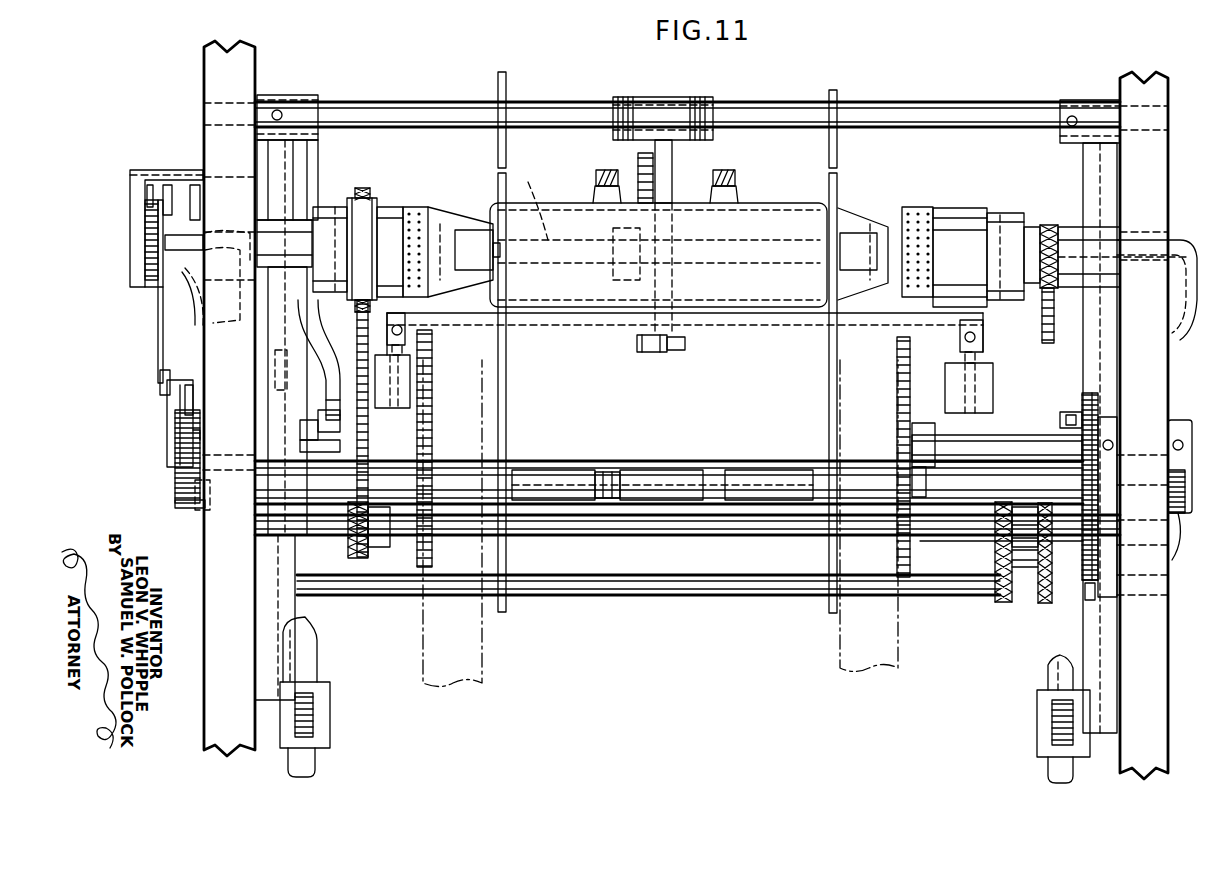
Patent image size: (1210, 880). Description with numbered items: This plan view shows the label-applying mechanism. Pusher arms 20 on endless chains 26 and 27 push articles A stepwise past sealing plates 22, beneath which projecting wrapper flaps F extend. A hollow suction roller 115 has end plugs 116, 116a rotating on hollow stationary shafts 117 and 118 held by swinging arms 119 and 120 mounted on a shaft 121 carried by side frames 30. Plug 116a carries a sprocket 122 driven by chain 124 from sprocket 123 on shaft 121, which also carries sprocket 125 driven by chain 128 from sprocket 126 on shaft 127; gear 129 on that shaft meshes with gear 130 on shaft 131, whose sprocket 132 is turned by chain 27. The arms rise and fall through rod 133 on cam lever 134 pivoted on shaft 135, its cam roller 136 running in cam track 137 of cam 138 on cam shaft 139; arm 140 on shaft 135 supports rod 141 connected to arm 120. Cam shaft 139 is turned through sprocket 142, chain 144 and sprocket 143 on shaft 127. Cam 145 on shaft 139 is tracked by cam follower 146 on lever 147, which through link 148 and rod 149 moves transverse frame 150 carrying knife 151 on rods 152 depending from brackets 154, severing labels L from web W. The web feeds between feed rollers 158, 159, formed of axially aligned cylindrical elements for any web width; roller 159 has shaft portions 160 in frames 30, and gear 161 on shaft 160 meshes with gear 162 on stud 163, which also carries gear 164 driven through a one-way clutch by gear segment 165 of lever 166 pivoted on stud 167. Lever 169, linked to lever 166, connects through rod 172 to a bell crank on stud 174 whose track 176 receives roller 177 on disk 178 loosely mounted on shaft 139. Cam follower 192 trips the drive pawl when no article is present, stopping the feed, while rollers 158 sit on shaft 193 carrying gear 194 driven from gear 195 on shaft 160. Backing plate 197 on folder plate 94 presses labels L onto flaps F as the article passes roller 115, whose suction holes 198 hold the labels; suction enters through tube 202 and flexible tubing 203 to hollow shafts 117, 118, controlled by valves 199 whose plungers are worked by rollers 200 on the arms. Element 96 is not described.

The pusher arms 20 is at (671, 174).
The heat-sealing plate 22 is at (665, 323).
The endless chain 26 is at (441, 448).
The endless chain 27 is at (893, 488).
The side frames 30 is at (666, 410).
The folder plate 94 is at (685, 350).
The web guide lines 96 is at (660, 523).
The seal applying roller 115 is at (682, 227).
The plug 116 is at (334, 213).
The plug 116a is at (1019, 219).
The hollow stationary shaft 117 is at (347, 223).
The hollow stationary shaft 118 is at (1004, 236).
The swinging arm 119 is at (322, 603).
The swinging arm 120 is at (1078, 438).
The shaft 121 is at (648, 614).
The sprocket 122 is at (1052, 258).
The sprocket 123 is at (1035, 577).
The chain 124 is at (1064, 454).
The second sprocket 125 is at (991, 604).
The sprocket 126 is at (1001, 551).
The shaft 127 is at (687, 542).
The chain 128 is at (978, 569).
The gear 129 is at (1120, 609).
The gear 130 is at (1120, 471).
The shaft 131 is at (997, 416).
The sprocket 132 is at (891, 460).
The rod 133 is at (320, 440).
The cam lever 134 is at (304, 236).
The pivot shaft 135 is at (687, 80).
The cam roller 136 is at (227, 287).
The cam track 137 is at (241, 349).
The cam 138 is at (224, 325).
The cam shaft 139 is at (529, 200).
The arm 140 is at (1090, 88).
The rod 141 is at (1061, 399).
The sprocket 142 is at (375, 223).
The sprocket 143 is at (377, 562).
The chain 144 is at (383, 428).
The cam 145 is at (619, 118).
The cam follower 146 is at (666, 261).
The cam lever 147 is at (674, 216).
The link 148 is at (682, 363).
The rod 149 is at (644, 362).
The transverse frame 150 is at (762, 357).
The knife 151 is at (722, 357).
The spaced rods 152 is at (710, 332).
The brackets 154 is at (684, 379).
The feed rollers 158 is at (669, 499).
The feed roller 159 is at (553, 465).
The shaft portions 160 is at (661, 507).
The gear 161 is at (158, 494).
The gear 162 is at (149, 456).
The stud 163 is at (229, 450).
The gear 164 is at (156, 455).
The gear segment 165 is at (139, 425).
The lever 166 is at (215, 389).
The stud 167 is at (239, 401).
The lever 169 is at (145, 418).
The rod 172 is at (133, 291).
The stud 174 is at (135, 227).
The longitudinal track 176 is at (113, 240).
The roller 177 is at (110, 200).
The disk 178 is at (115, 288).
The cam follower 192 is at (166, 195).
The shaft 193 is at (613, 464).
The gear 194 is at (1158, 460).
The gear 195 is at (1152, 541).
The backing plate 197 is at (666, 262).
The suction holes 198 is at (668, 216).
The valve 199 is at (685, 716).
The rollers 200 is at (684, 727).
The tube 202 is at (680, 768).
The flexible tubing 203 is at (652, 478).
The articles A is at (658, 239).
The wrapper flaps F is at (658, 217).
The labels L is at (663, 214).
The web W is at (652, 701).